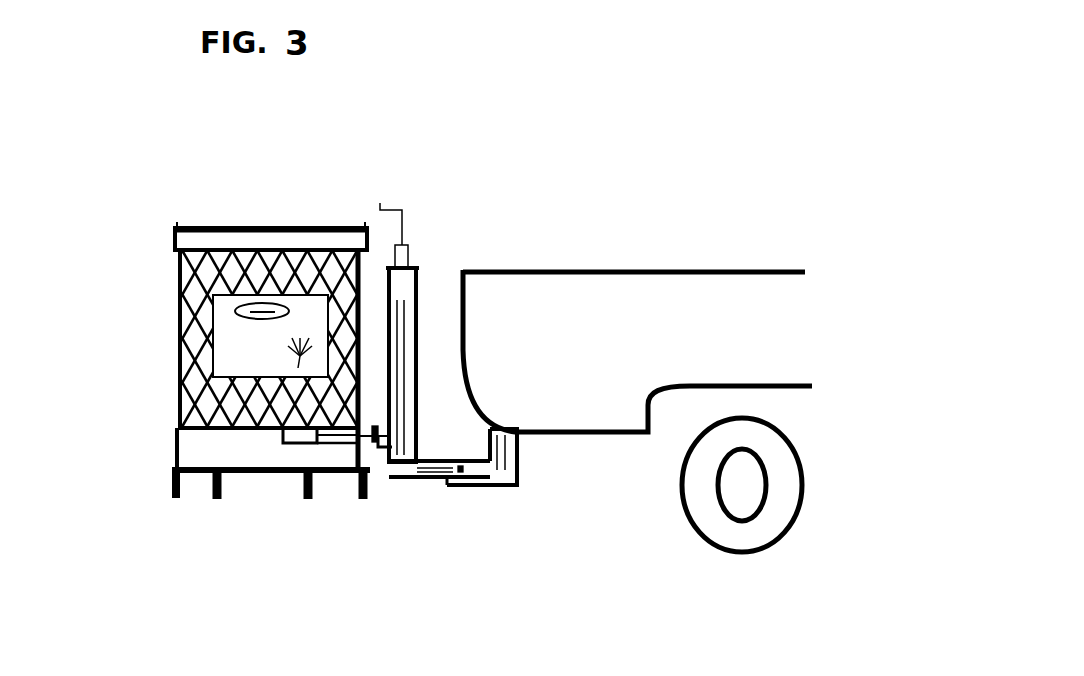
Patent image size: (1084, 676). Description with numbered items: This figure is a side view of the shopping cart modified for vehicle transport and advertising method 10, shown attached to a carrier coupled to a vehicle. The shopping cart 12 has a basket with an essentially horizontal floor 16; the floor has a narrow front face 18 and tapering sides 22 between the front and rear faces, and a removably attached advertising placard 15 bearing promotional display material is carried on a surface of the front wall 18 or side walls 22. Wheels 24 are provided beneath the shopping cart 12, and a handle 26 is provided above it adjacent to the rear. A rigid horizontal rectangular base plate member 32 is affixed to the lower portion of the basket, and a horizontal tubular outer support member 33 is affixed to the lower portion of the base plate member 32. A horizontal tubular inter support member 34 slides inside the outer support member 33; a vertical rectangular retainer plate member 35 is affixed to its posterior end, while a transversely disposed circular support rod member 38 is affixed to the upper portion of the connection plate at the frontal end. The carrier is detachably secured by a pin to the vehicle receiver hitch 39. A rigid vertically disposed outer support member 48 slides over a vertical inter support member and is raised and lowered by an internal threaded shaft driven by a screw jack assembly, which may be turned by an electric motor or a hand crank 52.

The shopping cart modified for vehicle transport and advertising method 10 is at (148, 334).
The shopping cart 12 is at (180, 268).
The advertising placard 15 is at (307, 317).
The horizontal floor 16 is at (180, 428).
The front face 18 is at (293, 259).
The tapering sides 22 is at (180, 367).
The wheels 24 is at (172, 487).
The handle 26 is at (258, 228).
The base plate member 32 is at (252, 428).
The outer support member 33 is at (305, 445).
The inter support member 34 is at (370, 467).
The retainer plate member 35 is at (283, 445).
The support rod member 38 is at (402, 462).
The vehicle receiver hitch 39 is at (503, 482).
The outer support member 48 is at (402, 285).
The hand crank 52 is at (390, 208).